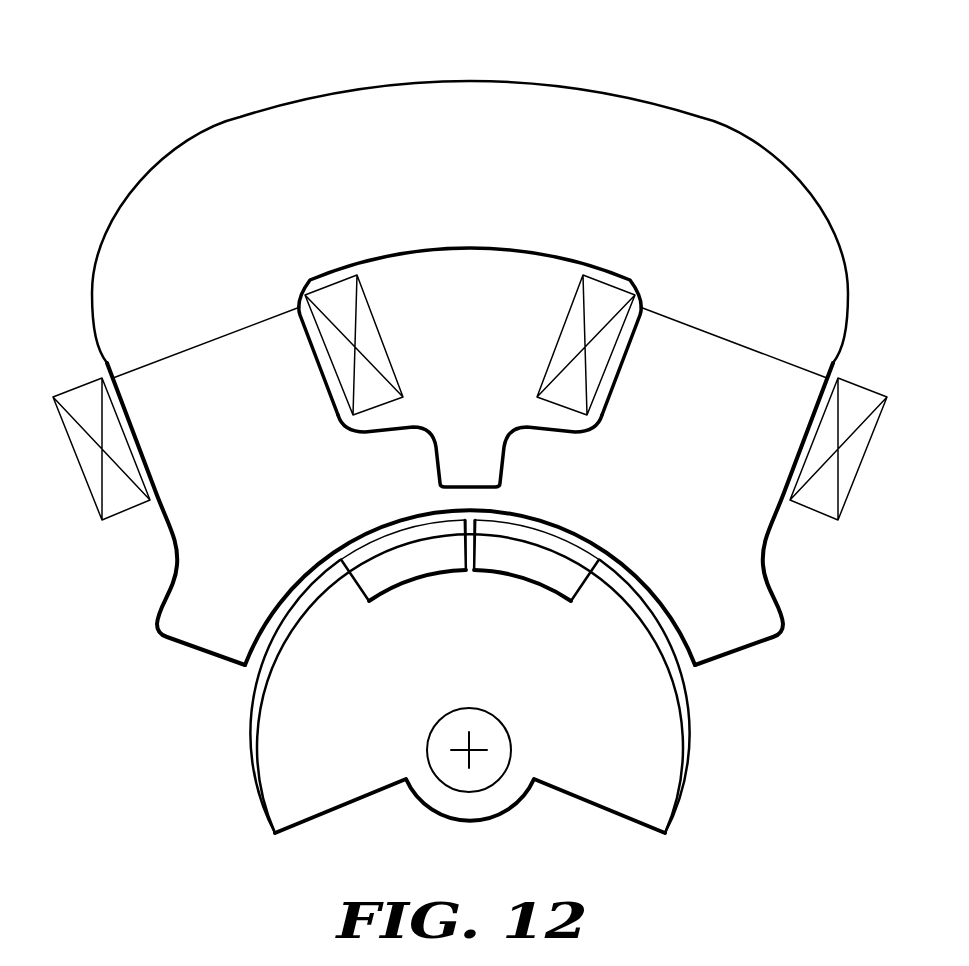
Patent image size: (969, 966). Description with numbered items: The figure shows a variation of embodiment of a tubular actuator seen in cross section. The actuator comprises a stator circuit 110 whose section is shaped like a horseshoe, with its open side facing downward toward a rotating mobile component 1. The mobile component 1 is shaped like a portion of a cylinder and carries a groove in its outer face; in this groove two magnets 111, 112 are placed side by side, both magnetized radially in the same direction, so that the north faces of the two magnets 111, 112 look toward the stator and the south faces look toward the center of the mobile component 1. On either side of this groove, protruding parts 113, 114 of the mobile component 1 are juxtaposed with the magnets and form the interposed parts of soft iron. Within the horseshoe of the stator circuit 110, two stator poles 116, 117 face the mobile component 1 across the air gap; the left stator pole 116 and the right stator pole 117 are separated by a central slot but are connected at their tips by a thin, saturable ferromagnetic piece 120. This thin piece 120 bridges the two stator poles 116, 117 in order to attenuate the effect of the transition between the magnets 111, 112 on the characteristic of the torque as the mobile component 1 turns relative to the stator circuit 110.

The mobile component 1 is at (720, 782).
The stator circuit 110 is at (567, 107).
The magnet 111 is at (362, 558).
The magnet 112 is at (578, 558).
The protruding part 113 is at (337, 598).
The protruding part 114 is at (603, 598).
The stator pole 116 is at (340, 452).
The stator pole 117 is at (685, 450).
The thin saturable ferromagnetic piece 120 is at (472, 490).